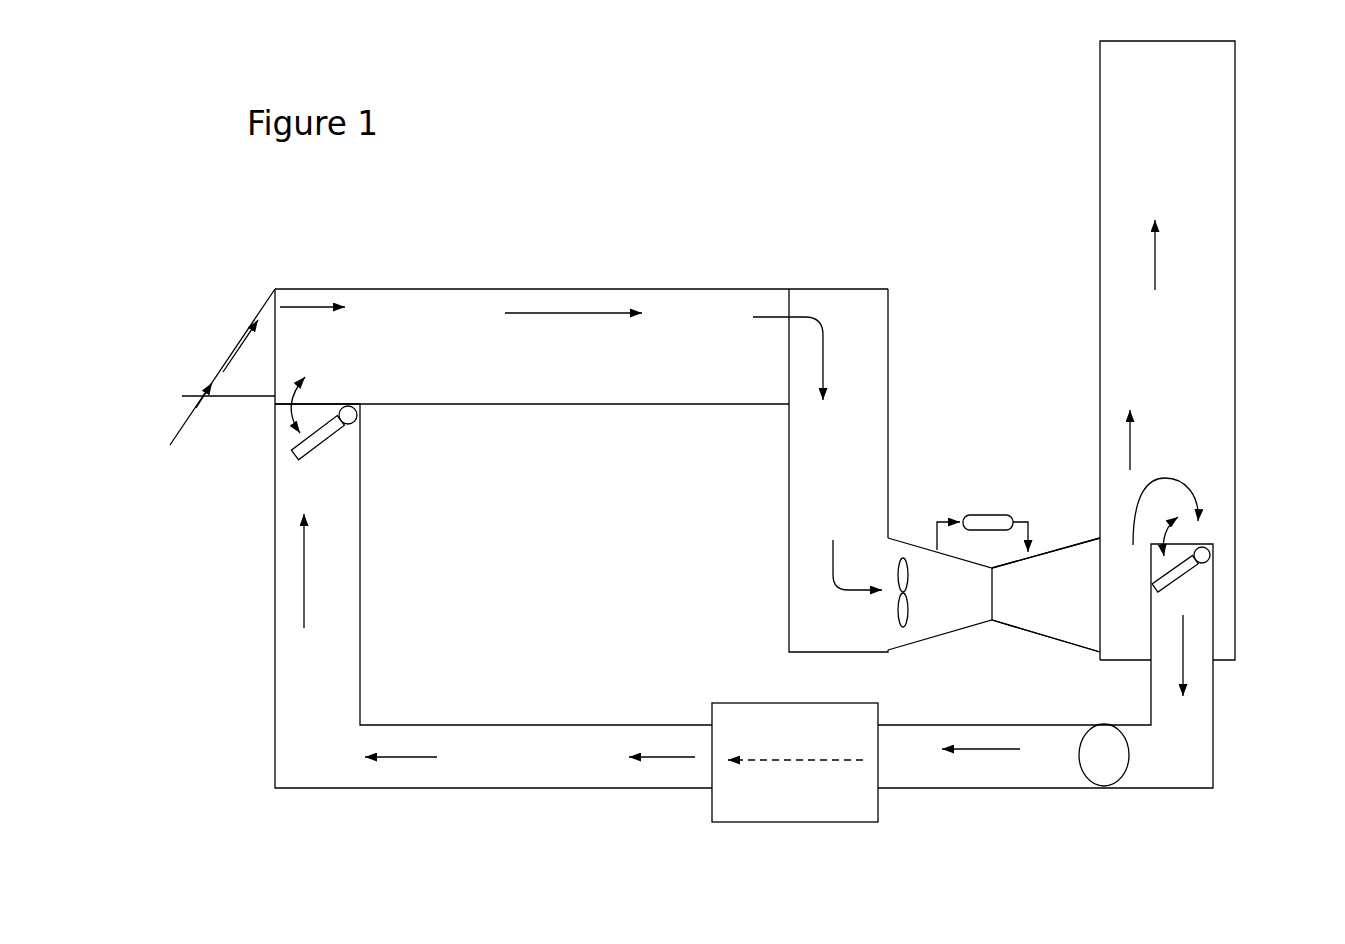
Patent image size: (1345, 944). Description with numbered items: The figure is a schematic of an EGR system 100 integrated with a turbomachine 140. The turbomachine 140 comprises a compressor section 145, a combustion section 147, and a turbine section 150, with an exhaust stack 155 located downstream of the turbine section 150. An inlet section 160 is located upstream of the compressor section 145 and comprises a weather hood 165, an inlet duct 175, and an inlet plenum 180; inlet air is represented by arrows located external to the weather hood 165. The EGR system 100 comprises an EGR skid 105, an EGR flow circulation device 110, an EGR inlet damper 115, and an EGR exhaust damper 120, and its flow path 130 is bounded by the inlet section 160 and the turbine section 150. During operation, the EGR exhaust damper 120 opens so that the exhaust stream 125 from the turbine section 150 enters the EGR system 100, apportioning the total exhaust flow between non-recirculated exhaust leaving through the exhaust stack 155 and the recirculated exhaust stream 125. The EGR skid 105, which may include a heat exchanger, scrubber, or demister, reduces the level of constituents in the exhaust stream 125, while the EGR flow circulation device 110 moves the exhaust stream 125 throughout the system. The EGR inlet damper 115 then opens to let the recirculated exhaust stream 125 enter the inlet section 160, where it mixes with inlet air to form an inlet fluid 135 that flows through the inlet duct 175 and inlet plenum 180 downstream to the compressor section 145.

The EGR system 100 is at (658, 695).
The EGR skid 105 is at (877, 812).
The EGR flow circulation device 110 is at (1102, 787).
The EGR inlet damper 115 is at (365, 423).
The EGR exhaust damper 120 is at (1197, 584).
The exhaust stream 125 is at (313, 590).
The flow path 130 is at (513, 780).
The inlet fluid 135 is at (314, 356).
The turbomachine 140 is at (976, 658).
The compressor section 145 is at (935, 645).
The combustion section 147 is at (992, 515).
The turbine section 150 is at (1040, 642).
The exhaust stack 155 is at (1243, 293).
The inlet section 160 is at (895, 201).
The weather hood 165 is at (203, 372).
The inlet duct 175 is at (609, 287).
The inlet plenum 180 is at (833, 289).